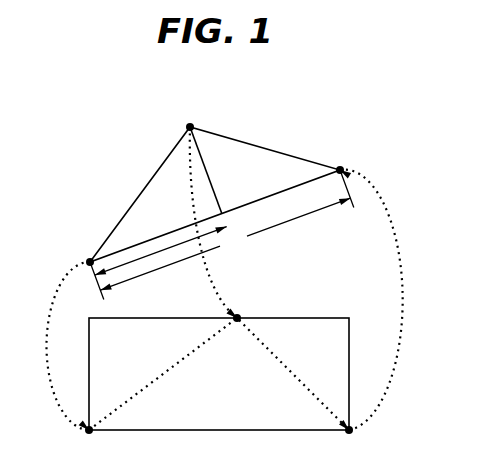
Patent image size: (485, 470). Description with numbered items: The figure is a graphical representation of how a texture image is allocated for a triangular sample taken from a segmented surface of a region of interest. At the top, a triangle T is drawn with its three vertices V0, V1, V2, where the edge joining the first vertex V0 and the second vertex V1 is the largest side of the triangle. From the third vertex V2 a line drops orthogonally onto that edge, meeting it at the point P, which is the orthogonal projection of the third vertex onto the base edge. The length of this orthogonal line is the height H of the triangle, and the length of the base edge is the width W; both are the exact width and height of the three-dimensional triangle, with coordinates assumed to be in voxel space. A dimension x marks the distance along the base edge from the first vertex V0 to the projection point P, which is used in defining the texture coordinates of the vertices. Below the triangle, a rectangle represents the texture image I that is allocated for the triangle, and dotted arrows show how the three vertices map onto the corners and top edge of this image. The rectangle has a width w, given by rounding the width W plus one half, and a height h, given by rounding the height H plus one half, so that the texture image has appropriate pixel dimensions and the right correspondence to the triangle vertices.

The triangle T is at (215, 194).
The first vertex V0 is at (70, 332).
The second vertex V1 is at (367, 281).
The third vertex V2 is at (211, 203).
The triangle height H is at (208, 170).
The orthogonal projection P is at (234, 223).
The distance between v0 and P x is at (161, 251).
The triangle width W is at (222, 235).
The texture image I is at (219, 374).
The texture image height h is at (362, 376).
The texture image width w is at (233, 443).